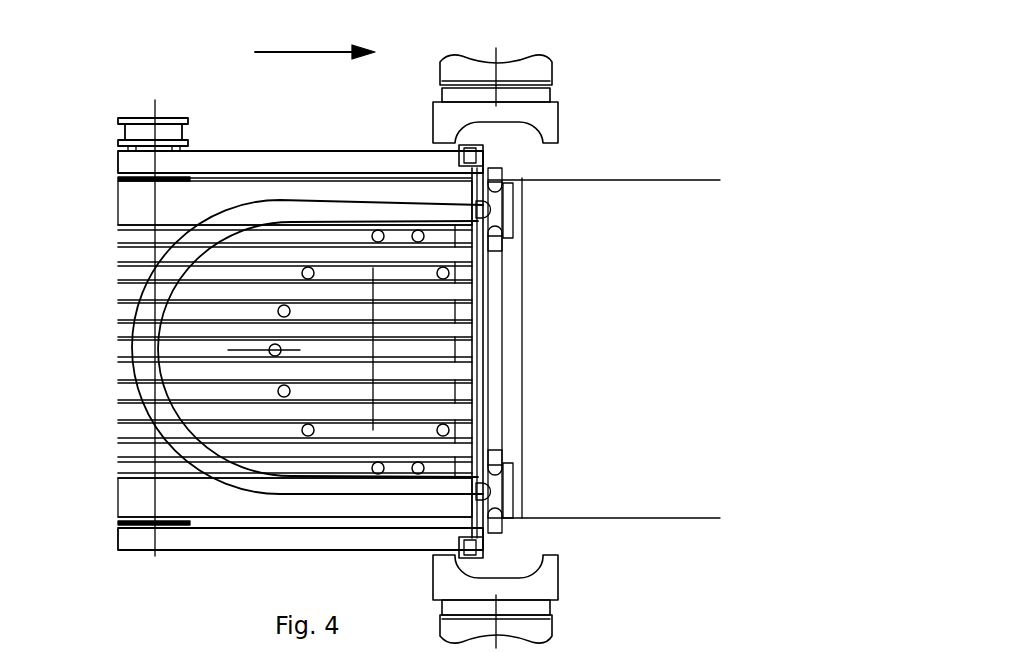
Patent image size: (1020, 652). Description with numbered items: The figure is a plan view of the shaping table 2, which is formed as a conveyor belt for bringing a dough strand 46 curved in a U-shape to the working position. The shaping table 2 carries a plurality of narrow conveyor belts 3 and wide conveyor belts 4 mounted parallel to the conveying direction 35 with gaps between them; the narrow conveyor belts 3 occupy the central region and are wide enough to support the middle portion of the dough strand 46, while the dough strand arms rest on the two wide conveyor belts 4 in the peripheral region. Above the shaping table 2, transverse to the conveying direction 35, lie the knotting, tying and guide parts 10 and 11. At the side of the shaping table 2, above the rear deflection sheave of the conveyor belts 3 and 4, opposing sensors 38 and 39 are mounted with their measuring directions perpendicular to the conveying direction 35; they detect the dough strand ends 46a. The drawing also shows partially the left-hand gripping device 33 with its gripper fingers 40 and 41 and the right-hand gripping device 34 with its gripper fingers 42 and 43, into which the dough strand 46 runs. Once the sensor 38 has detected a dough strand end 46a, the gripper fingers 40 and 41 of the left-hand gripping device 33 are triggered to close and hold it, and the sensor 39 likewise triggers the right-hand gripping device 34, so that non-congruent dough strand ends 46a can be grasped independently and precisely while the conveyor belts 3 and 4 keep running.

The shaping table 2 is at (350, 140).
The narrow conveyor belts 3 is at (142, 448).
The wide conveyor belts 4 is at (131, 207).
The knotting, tying and guide part 10 is at (547, 118).
The knotting, tying and guide part 11 is at (542, 578).
The left-hand gripping device 33 is at (514, 228).
The right-hand gripping device 34 is at (514, 470).
The conveying direction 35 is at (315, 33).
The sensor 38 is at (470, 151).
The sensor 39 is at (464, 552).
The gripper finger 40 is at (495, 175).
The gripper finger 41 is at (495, 244).
The gripper finger 42 is at (495, 457).
The gripper finger 43 is at (495, 525).
The dough strand 46 is at (320, 213).
The dough strand ends 46a is at (483, 209).